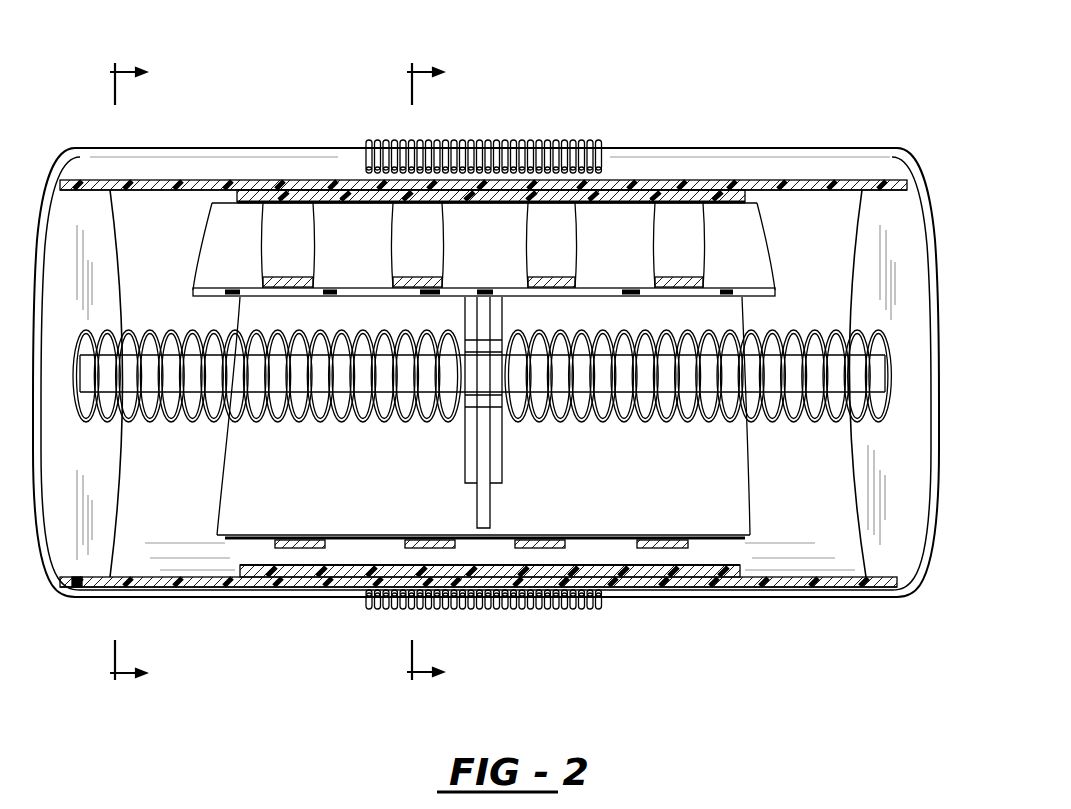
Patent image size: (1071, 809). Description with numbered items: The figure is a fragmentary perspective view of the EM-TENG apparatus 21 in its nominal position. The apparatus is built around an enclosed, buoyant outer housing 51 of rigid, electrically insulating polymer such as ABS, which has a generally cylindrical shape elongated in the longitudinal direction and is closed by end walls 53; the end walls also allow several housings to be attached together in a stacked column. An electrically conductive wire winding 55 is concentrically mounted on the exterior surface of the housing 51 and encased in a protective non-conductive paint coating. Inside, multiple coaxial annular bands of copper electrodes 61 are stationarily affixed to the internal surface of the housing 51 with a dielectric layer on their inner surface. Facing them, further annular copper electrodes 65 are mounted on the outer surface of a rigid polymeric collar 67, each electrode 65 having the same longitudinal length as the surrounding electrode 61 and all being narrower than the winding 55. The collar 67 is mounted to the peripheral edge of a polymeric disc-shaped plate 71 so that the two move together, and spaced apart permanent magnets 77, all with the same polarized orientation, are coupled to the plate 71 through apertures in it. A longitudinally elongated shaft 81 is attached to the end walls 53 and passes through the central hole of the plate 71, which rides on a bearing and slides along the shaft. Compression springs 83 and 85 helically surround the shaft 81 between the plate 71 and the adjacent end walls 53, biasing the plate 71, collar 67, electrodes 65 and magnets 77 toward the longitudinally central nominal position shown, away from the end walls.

The EM-TENG apparatus 21 is at (686, 40).
The outer housing 51 is at (192, 166).
The end walls 53 is at (62, 238).
The wire winding 55 is at (528, 138).
The electrodes 61 is at (304, 186).
The electrodes 65 is at (413, 535).
The collar 67 is at (722, 485).
The plate 71 is at (492, 505).
The permanent magnets 77 is at (503, 317).
The shaft 81 is at (192, 378).
The compression spring 83 is at (797, 417).
The compression spring 85 is at (153, 423).